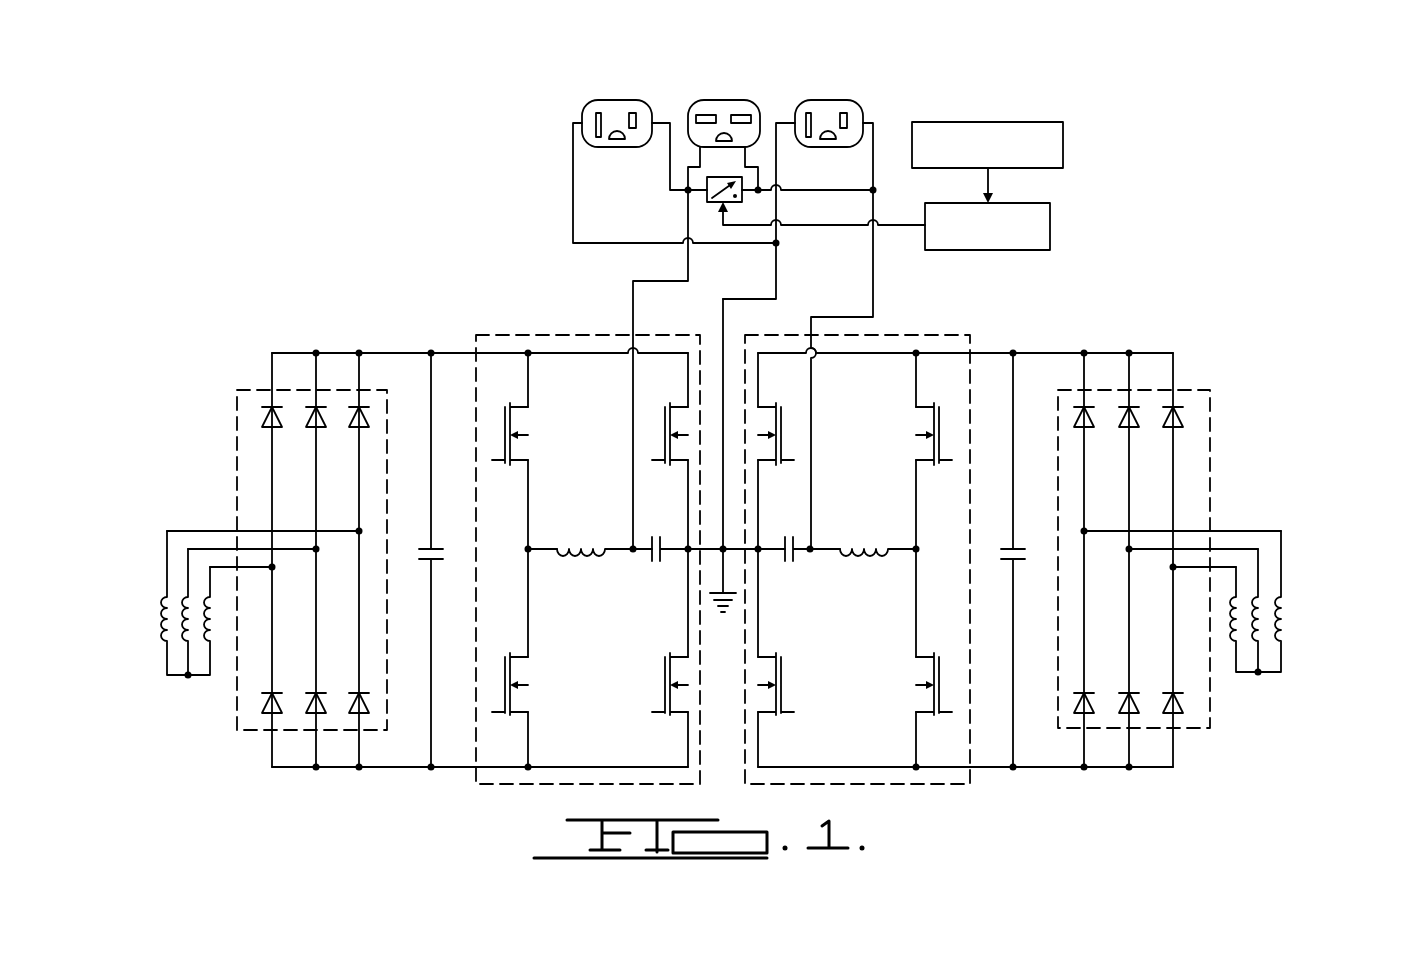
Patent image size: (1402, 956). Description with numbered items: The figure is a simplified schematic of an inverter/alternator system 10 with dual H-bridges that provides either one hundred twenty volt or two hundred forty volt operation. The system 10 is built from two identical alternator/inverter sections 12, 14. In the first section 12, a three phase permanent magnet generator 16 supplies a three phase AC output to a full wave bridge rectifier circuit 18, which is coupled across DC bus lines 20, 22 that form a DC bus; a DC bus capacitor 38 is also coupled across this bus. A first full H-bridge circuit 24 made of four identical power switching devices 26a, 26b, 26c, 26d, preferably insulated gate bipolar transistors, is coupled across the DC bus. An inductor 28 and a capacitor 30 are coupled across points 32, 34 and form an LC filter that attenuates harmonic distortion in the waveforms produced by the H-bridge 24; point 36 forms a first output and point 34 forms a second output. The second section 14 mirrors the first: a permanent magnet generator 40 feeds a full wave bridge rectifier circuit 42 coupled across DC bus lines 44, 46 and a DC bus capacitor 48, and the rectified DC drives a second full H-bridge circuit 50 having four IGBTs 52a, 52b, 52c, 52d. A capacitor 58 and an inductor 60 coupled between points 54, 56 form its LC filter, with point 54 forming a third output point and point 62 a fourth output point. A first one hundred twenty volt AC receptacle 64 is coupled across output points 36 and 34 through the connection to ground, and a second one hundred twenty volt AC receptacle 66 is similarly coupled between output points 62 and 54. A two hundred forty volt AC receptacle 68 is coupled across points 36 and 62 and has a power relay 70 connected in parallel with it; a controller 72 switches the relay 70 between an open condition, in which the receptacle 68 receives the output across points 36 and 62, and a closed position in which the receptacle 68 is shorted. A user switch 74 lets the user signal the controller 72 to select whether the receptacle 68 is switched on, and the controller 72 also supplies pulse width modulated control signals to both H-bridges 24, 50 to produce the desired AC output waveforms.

The system 10 is at (390, 131).
The alternator/inverter section 12 is at (391, 348).
The alternator/inverter section 14 is at (1099, 326).
The three phase permanent magnet generator 16 is at (145, 621).
The full wave bridge rectifier circuit 18 is at (237, 470).
The DC bus line 20 is at (570, 355).
The DC bus line 22 is at (587, 767).
The full H-bridge circuit 24 is at (562, 333).
The power switching device 26a is at (515, 420).
The power switching device 26b is at (665, 700).
The power switching device 26c is at (663, 425).
The power switching device 26d is at (513, 672).
The inductor 28 is at (575, 560).
The capacitor 30 is at (650, 562).
The point 32 is at (528, 545).
The point 34 is at (688, 545).
The point 36 is at (633, 545).
The DC bus capacitor 38 is at (428, 548).
The three phase permanent magnet generator 40 is at (1304, 608).
The full wave bridge rectifier circuit 42 is at (1213, 500).
The DC bus line 44 is at (882, 353).
The DC bus line 46 is at (815, 767).
The DC bus capacitor 48 is at (1010, 547).
The full H-bridge circuit 50 is at (935, 333).
The IGBT 52a is at (932, 422).
The IGBT 52b is at (783, 682).
The IGBT 52c is at (783, 425).
The IGBT 52d is at (935, 672).
The point 54 is at (760, 546).
The point 56 is at (912, 555).
The capacitor 58 is at (783, 565).
The inductor 60 is at (857, 565).
The point 62 is at (812, 546).
The 120 volt AC receptacle 64 is at (582, 122).
The 120 volt AC receptacle 66 is at (862, 113).
The 240 volt AC receptacle 68 is at (692, 105).
The power relay 70 is at (707, 195).
The controller 72 is at (1050, 232).
The user switch 74 is at (1063, 130).